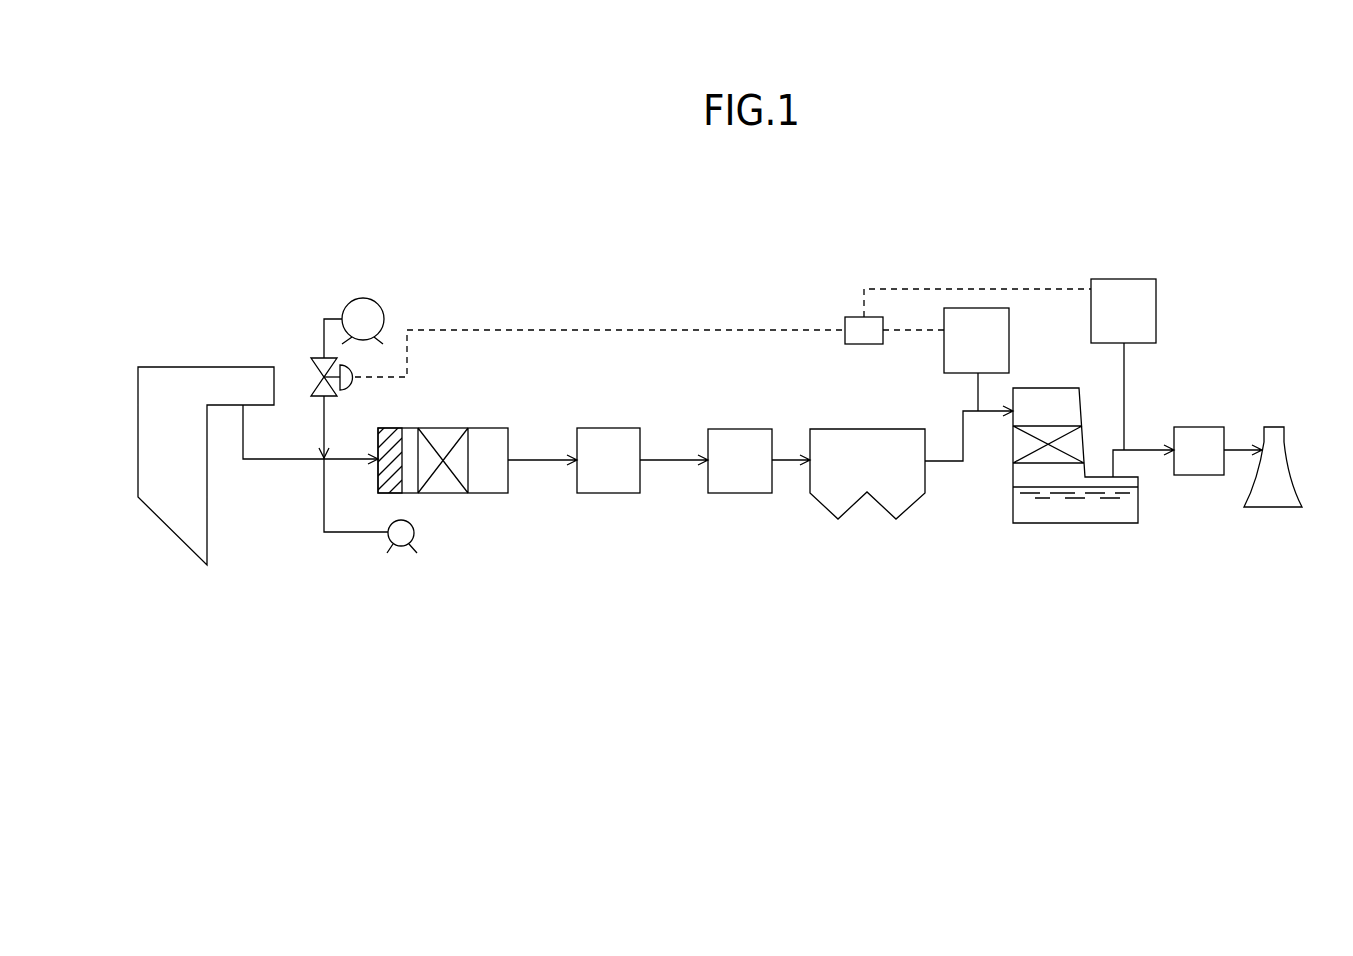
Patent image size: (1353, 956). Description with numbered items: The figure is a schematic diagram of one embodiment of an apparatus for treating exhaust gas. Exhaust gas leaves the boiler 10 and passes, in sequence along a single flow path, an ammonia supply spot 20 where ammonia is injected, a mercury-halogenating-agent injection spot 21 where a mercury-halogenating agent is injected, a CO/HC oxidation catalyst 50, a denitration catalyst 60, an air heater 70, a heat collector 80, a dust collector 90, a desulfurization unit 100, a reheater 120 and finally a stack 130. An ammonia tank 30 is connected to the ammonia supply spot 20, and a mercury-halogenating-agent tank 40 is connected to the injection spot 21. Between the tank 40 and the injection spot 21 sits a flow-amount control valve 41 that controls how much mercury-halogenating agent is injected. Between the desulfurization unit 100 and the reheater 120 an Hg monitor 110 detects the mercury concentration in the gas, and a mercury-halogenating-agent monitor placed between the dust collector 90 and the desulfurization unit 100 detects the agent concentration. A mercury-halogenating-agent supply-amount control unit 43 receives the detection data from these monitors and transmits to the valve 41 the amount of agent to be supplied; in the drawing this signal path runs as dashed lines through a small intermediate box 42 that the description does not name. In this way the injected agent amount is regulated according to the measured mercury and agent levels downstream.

The boiler 10 is at (192, 367).
The NH3 supply spot 20 is at (319, 473).
The mercury-halogenating-agent injection spot 21 is at (328, 449).
The NH3 tank 30 is at (405, 553).
The mercury-halogenating-agent tank 40 is at (357, 298).
The flow-amount control valve 41 is at (317, 380).
The controller 42 is at (855, 317).
The mercury-halogenating-agent supply-amount control unit 43 is at (944, 367).
The CO/HC oxidation catalyst 50 is at (392, 493).
The denitration catalyst 60 is at (443, 428).
The air heater 70 is at (620, 428).
The heat collector 80 is at (738, 429).
The dust collector 90 is at (851, 512).
The desulfurization unit 100 is at (1035, 523).
The Hg monitor 110 is at (1130, 279).
The reheater 120 is at (1188, 475).
The stack 130 is at (1273, 507).